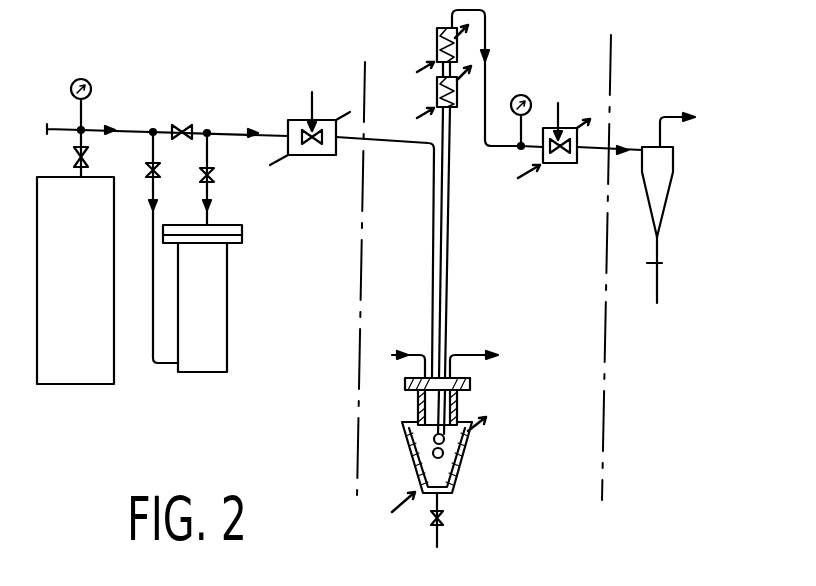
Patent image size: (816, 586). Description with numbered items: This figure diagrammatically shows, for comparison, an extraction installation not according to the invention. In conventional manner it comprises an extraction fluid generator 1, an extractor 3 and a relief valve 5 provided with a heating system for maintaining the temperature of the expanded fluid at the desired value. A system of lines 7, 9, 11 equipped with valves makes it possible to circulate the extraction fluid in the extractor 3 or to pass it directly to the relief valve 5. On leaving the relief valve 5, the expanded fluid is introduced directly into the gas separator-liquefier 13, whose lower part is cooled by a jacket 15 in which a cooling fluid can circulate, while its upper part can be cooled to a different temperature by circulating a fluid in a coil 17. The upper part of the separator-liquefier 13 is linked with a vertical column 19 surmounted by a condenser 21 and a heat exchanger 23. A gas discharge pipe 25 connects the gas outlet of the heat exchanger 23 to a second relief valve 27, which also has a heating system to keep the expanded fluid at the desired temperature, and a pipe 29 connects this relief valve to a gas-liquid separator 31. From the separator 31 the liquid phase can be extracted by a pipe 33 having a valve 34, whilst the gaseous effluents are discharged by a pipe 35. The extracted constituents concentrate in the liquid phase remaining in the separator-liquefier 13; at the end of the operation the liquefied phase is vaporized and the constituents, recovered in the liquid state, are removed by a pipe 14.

The extraction fluid generator 1 is at (74, 363).
The extractor 3 is at (212, 358).
The relief valve 5 is at (316, 152).
The line 7 is at (100, 128).
The line 9 is at (158, 370).
The line 11 is at (208, 218).
The gas separator-liquefier 13 is at (473, 452).
The pipe 14 is at (440, 540).
The jacket 15 is at (458, 473).
The coil 17 is at (455, 406).
The vertical column 19 is at (443, 248).
The condenser 21 is at (437, 95).
The heat exchanger 23 is at (437, 40).
The gas discharge pipe 25 is at (485, 45).
The relief valve 27 is at (553, 165).
The pipe 29 is at (613, 147).
The gas-liquid separator 31 is at (656, 203).
The pipe 33 is at (657, 292).
The valve 34 is at (663, 262).
The pipe 35 is at (662, 116).